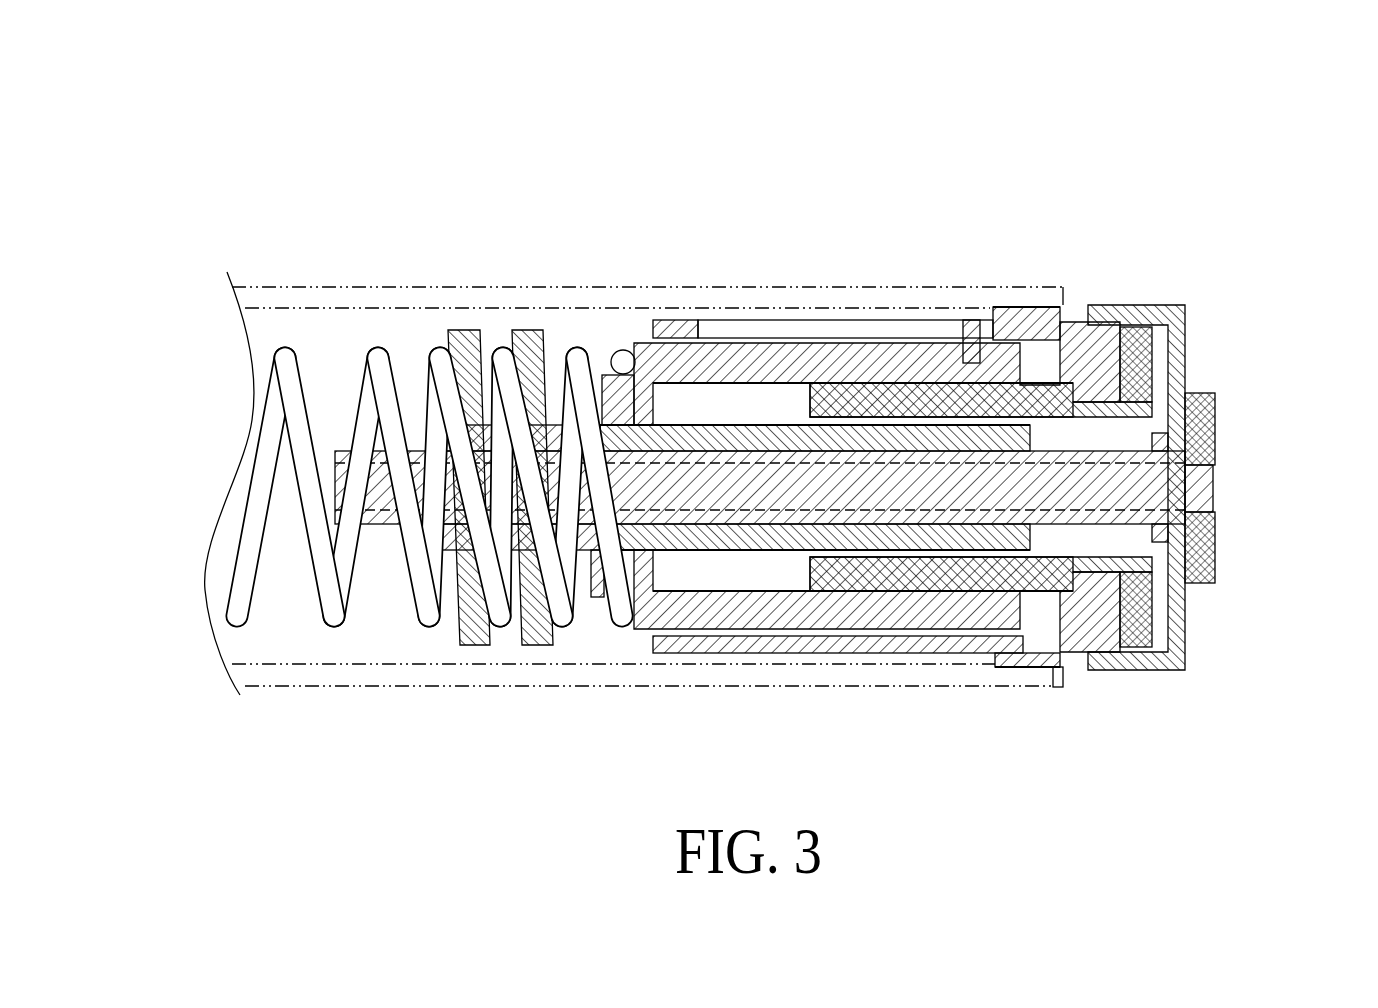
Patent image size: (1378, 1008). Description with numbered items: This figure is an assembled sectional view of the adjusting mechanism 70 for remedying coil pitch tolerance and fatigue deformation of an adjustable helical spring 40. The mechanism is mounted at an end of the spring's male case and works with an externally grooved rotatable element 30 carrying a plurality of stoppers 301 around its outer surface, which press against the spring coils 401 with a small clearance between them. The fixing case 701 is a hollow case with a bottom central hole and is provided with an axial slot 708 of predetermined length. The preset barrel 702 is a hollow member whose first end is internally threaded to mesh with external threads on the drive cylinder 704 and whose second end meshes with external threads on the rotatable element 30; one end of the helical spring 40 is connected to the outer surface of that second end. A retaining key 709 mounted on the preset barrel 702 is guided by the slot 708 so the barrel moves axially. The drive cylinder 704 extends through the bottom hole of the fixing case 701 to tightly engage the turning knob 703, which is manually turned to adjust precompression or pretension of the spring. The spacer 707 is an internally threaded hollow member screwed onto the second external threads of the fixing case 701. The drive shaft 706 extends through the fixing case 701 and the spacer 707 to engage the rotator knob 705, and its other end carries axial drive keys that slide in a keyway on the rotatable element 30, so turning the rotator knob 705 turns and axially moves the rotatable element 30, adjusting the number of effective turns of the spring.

The rotatable element 30 is at (584, 387).
The stoppers 301 is at (485, 333).
The adjustable helical spring 40 is at (406, 648).
The spring coils 401 is at (243, 493).
The adjusting mechanism 70 is at (979, 441).
The fixing case 701 is at (1130, 305).
The preset barrel 702 is at (778, 362).
The turning knob 703 is at (1133, 647).
The drive cylinder 704 is at (1043, 575).
The rotator knob 705 is at (1215, 412).
The drive shaft 706 is at (1215, 487).
The spacer 707 is at (1187, 618).
The axial slot 708 is at (862, 330).
The retaining key 709 is at (972, 322).